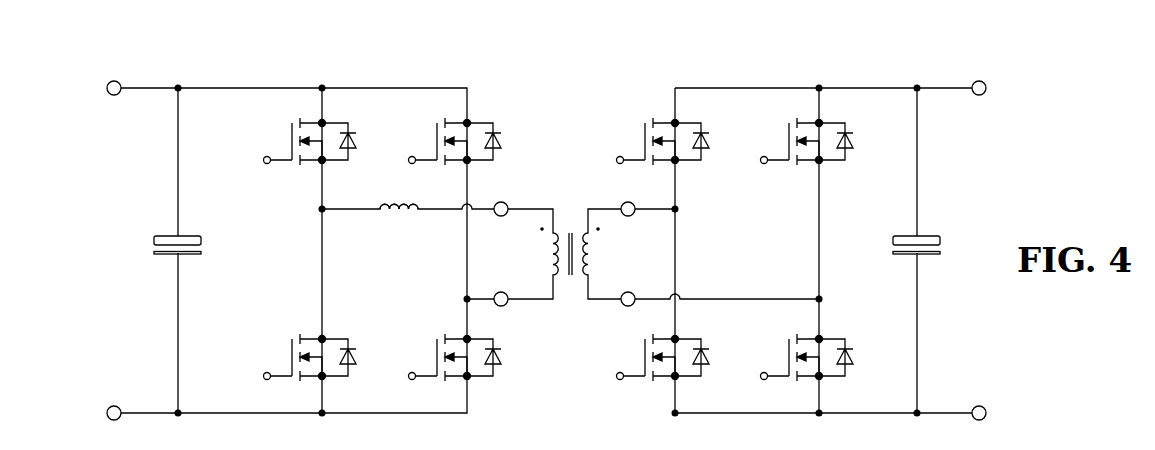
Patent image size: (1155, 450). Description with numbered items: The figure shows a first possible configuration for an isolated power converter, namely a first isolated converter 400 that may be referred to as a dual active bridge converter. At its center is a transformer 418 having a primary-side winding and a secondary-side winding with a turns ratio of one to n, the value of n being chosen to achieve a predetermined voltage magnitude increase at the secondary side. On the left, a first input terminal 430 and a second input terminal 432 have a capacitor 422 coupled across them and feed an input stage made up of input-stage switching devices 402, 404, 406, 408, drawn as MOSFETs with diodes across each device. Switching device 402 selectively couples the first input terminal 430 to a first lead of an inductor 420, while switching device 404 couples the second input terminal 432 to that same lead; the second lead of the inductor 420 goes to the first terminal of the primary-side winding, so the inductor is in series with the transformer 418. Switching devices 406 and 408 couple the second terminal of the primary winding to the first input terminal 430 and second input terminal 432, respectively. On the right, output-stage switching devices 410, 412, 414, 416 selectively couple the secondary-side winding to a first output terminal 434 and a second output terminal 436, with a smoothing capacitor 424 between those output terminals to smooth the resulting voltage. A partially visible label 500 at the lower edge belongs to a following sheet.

The first isolated converter 400 is at (928, 59).
The input-stage switching device 402 is at (292, 143).
The input-stage switching device 404 is at (292, 357).
The input-stage switching device 406 is at (437, 143).
The input-stage switching device 408 is at (437, 357).
The output-stage switching device 410 is at (645, 143).
The output-stage switching device 412 is at (645, 357).
The output-stage switching device 414 is at (789, 143).
The output-stage switching device 416 is at (789, 357).
The transformer 418 is at (570, 277).
The inductor 420 is at (389, 214).
The capacitor 422 is at (170, 236).
The smoothing capacitor 424 is at (928, 237).
The first input terminal 430 is at (114, 81).
The second input terminal 432 is at (114, 406).
The first output terminal 434 is at (979, 81).
The second output terminal 436 is at (979, 406).
The power converter (next figure, partially shown) 500 is at (975, 449).